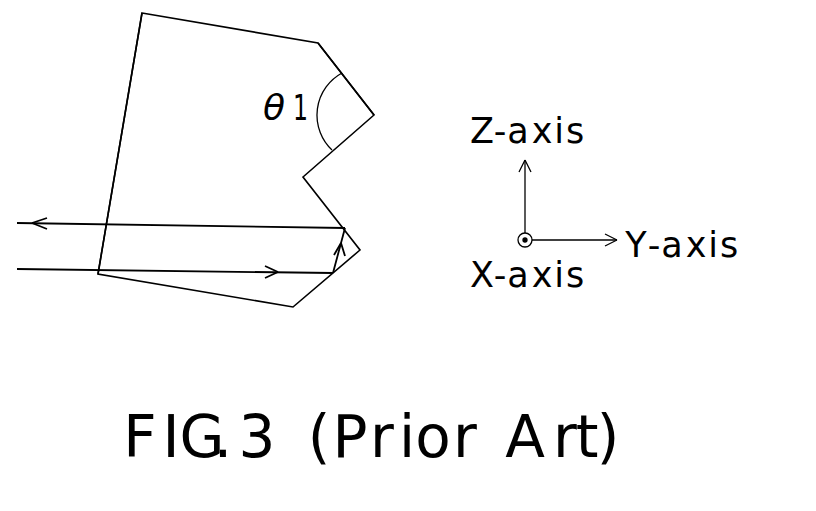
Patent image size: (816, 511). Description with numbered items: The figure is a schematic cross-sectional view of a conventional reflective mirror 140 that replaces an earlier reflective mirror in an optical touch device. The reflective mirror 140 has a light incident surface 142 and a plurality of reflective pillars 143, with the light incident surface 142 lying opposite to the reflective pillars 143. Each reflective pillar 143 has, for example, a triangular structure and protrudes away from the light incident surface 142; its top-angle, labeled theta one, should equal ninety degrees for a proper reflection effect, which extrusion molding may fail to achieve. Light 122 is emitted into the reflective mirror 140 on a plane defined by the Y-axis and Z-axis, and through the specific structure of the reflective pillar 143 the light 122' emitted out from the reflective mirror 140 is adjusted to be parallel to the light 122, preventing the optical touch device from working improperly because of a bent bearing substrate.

The reflective mirror 140 is at (333, 357).
The light incident surface 142 is at (124, 127).
The reflective pillar 143 is at (370, 75).
The light 122 is at (181, 288).
The light 122' is at (181, 189).